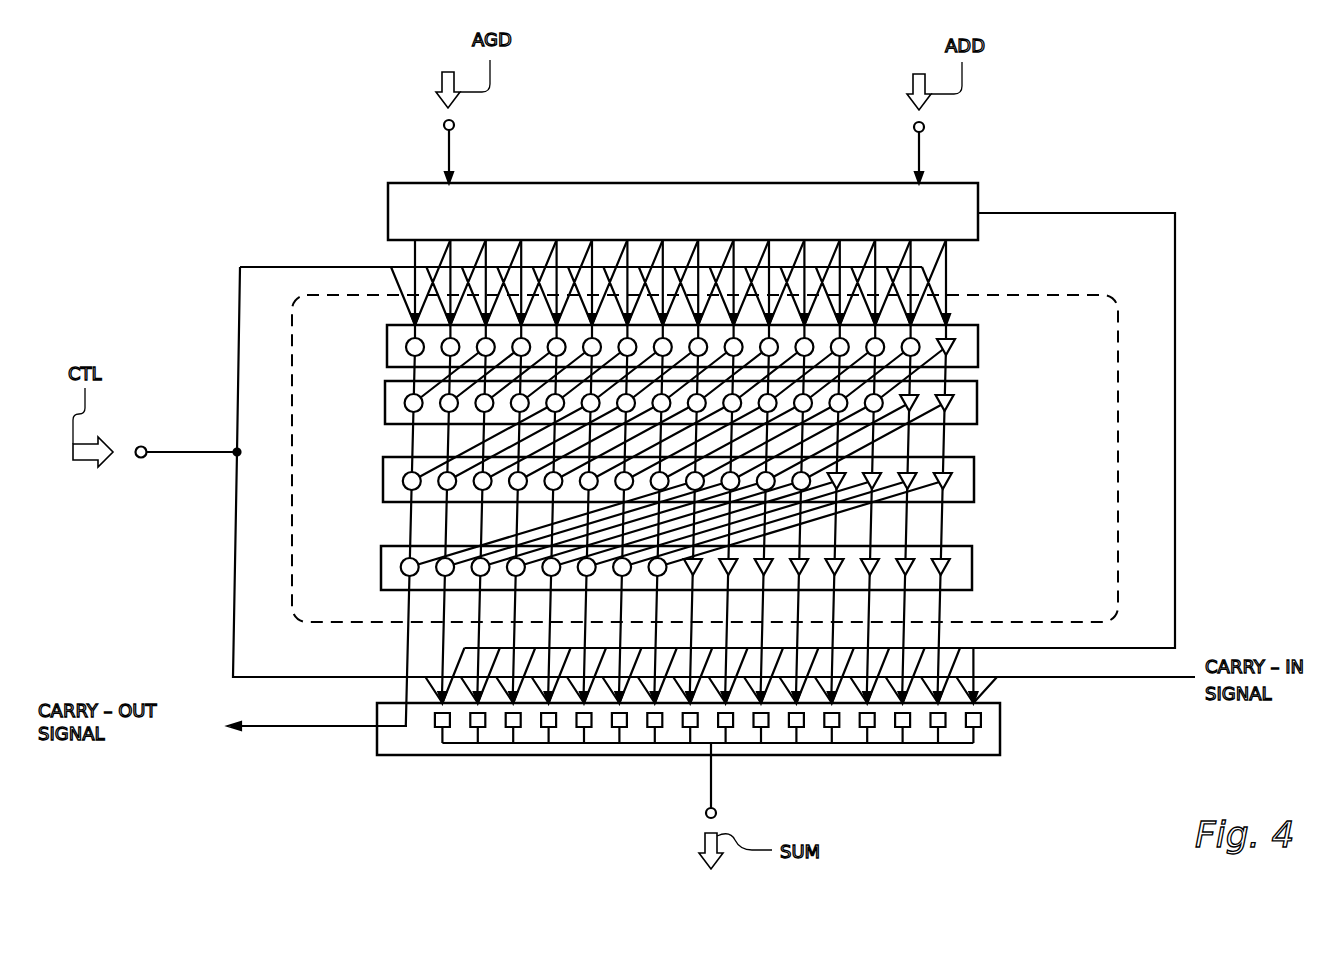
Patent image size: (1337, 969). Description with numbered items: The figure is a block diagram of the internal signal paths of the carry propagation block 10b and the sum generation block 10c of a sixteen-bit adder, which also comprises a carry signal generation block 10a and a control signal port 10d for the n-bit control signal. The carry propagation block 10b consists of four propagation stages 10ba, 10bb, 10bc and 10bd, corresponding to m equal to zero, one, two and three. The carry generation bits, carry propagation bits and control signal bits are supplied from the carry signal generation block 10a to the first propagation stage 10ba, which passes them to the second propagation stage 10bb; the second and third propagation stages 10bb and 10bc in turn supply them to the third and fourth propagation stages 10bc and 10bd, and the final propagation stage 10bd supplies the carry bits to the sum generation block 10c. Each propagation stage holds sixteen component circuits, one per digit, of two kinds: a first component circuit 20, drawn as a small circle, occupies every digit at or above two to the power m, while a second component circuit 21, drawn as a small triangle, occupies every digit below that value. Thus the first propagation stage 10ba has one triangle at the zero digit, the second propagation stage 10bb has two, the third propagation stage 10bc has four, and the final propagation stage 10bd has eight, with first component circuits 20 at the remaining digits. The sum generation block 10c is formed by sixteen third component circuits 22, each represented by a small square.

The carry signal generation block 10a is at (978, 187).
The carry propagation block 10b is at (1058, 295).
The first propagation stage 10ba is at (978, 360).
The second propagation stage 10bb is at (977, 410).
The third propagation stage 10bc is at (974, 490).
The fourth propagation stage 10bd is at (972, 574).
The sum generation block 10c is at (1000, 740).
The control signal port 10d is at (146, 458).
The first component circuit 20 is at (404, 348).
The second component circuit 21 is at (958, 349).
The third component circuit 22 is at (430, 712).